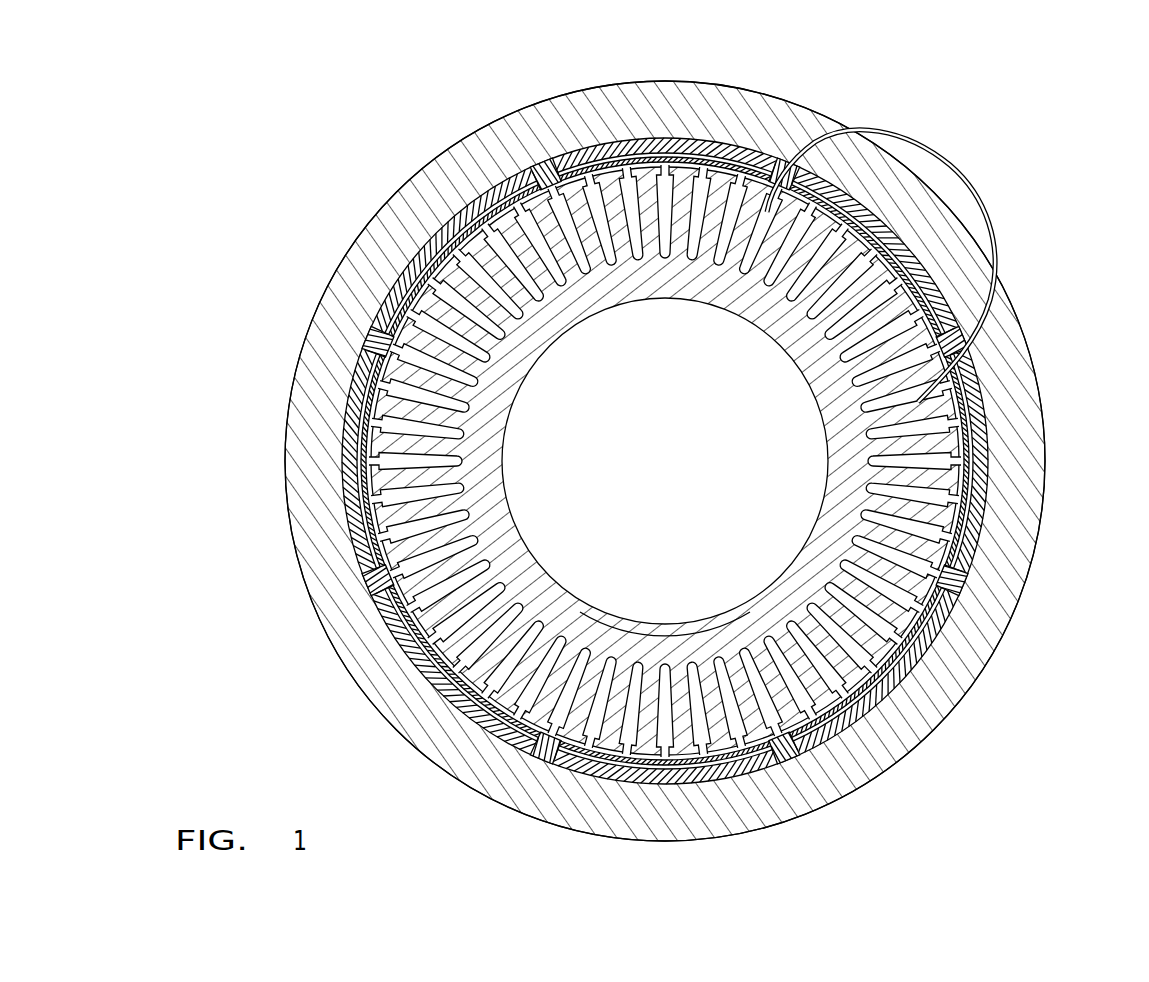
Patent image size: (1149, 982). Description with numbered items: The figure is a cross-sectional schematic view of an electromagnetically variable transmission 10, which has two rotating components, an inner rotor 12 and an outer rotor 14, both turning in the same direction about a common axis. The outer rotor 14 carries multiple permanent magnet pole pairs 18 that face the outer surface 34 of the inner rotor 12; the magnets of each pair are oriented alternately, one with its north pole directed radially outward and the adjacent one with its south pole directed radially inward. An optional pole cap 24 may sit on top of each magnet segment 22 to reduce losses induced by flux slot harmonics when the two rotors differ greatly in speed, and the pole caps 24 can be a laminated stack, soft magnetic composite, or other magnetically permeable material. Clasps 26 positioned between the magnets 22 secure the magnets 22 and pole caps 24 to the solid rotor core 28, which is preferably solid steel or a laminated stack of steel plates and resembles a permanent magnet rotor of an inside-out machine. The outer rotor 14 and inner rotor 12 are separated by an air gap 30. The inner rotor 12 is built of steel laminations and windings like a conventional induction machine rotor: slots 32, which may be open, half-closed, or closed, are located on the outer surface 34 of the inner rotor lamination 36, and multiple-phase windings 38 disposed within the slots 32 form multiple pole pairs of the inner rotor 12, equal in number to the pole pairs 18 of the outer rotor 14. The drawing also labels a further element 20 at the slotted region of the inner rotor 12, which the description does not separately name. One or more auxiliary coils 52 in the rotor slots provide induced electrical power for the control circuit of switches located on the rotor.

The electromagnetically variable transmission 10 is at (678, 434).
The inner rotor 12 is at (665, 461).
The outer rotor 14 is at (695, 461).
The permanent magnet pole pairs 18 is at (649, 430).
The slots 20 is at (856, 498).
The magnet segment 22 is at (397, 283).
The pole cap 24 is at (402, 208).
The clasp 26 is at (360, 590).
The rotor core 28 is at (293, 438).
The air gap 30 is at (945, 650).
The slots 32 is at (790, 630).
The outer surface 34 is at (600, 770).
The inner rotor lamination 36 is at (660, 620).
The multiple-phase windings 38 is at (634, 265).
The auxiliary coil 52 is at (935, 173).